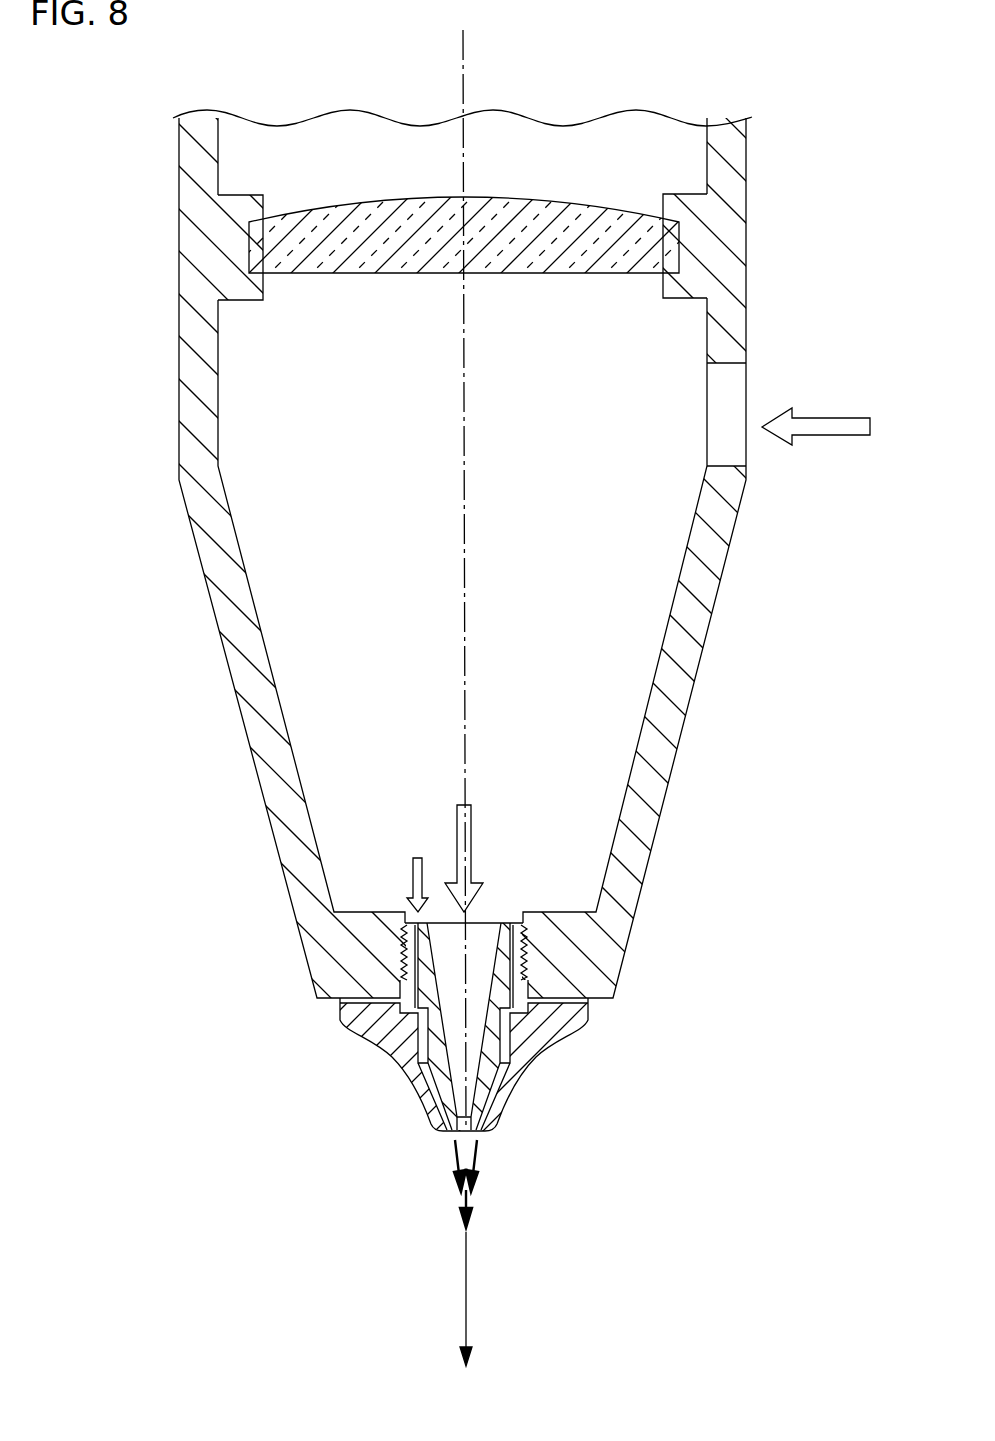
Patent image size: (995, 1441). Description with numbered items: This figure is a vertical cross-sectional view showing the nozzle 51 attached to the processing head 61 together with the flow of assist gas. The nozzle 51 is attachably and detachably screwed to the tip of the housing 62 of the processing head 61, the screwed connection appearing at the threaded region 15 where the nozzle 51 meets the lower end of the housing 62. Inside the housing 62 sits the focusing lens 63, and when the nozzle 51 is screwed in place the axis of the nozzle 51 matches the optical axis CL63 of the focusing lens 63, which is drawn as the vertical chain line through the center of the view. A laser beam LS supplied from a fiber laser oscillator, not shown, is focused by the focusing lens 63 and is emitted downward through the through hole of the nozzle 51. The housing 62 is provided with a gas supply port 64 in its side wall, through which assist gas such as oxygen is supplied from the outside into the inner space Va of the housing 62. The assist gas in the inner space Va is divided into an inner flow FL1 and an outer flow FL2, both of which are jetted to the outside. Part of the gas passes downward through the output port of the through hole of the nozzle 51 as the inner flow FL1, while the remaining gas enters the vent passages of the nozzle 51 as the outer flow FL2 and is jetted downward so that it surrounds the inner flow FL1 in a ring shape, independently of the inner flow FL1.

The processing head 61 is at (748, 141).
The housing 62 is at (728, 258).
The focusing lens 63 is at (667, 243).
The gas supply port 64 is at (727, 380).
The screw thread 15 is at (404, 952).
The nozzle 51 is at (397, 1057).
The inner space Va is at (612, 680).
The inner flow FL1 is at (473, 817).
The outer flow FL2 is at (413, 857).
The laser beam LS is at (466, 1287).
The optical axis CL63 is at (463, 62).